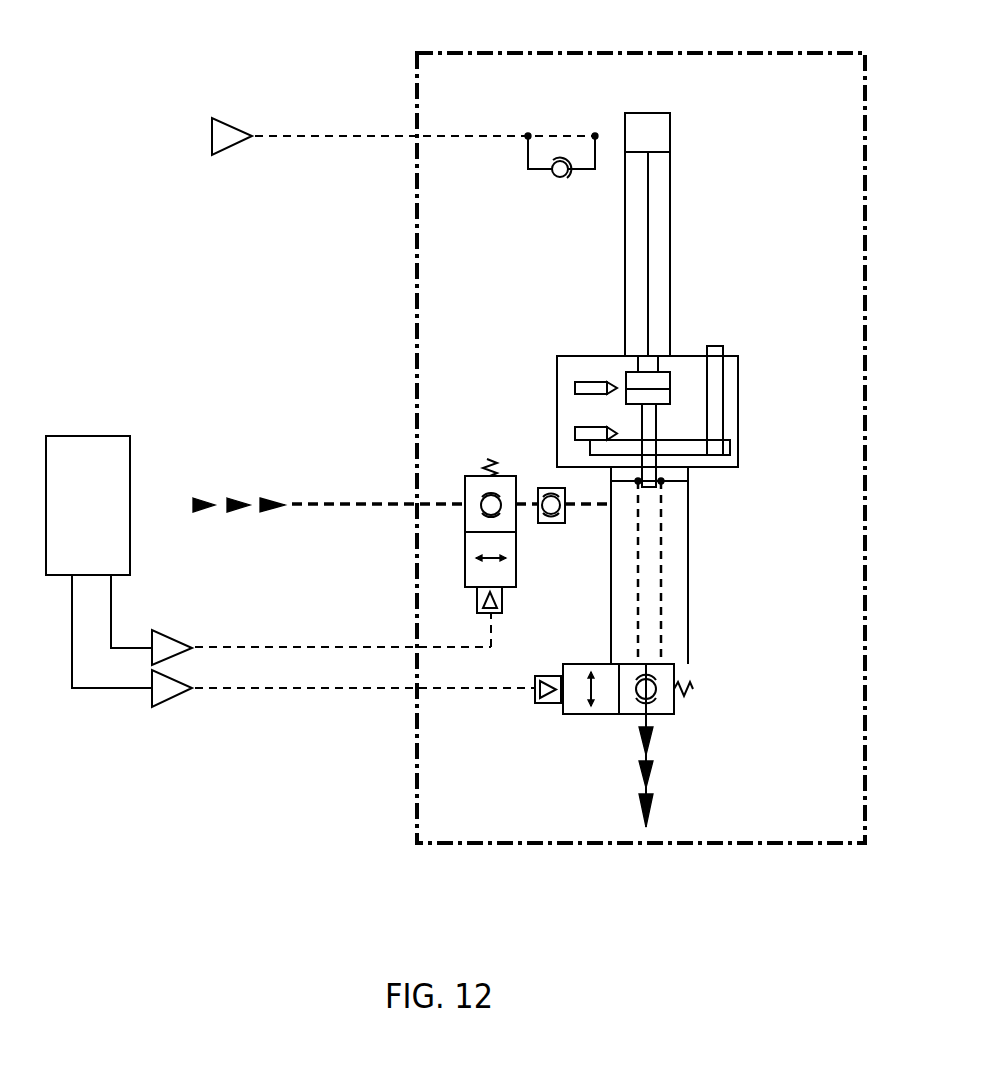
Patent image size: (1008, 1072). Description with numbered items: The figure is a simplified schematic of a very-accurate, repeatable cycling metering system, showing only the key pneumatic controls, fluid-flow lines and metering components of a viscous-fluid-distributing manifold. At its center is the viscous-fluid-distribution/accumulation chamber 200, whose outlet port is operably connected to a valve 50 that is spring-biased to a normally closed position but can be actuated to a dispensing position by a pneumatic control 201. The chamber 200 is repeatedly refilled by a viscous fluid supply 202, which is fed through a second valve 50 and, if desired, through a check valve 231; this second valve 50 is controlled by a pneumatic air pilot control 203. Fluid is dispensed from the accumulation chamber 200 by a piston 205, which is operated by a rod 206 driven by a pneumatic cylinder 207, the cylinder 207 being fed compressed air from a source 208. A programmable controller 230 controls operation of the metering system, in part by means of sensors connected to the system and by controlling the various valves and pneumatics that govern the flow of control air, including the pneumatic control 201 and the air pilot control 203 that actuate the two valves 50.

The valve 50 is at (465, 487).
The viscous-fluid-distribution/accumulation chamber 200 is at (688, 582).
The pneumatic control 201 is at (165, 697).
The viscous fluid supply 202 is at (195, 503).
The pneumatic air pilot control 203 is at (173, 633).
The piston 205 is at (688, 480).
The rod 206 is at (635, 237).
The pneumatic cylinder 207 is at (662, 174).
The compressed air source 208 is at (230, 127).
The programmable controller 230 is at (108, 441).
The check valve 231 is at (548, 488).